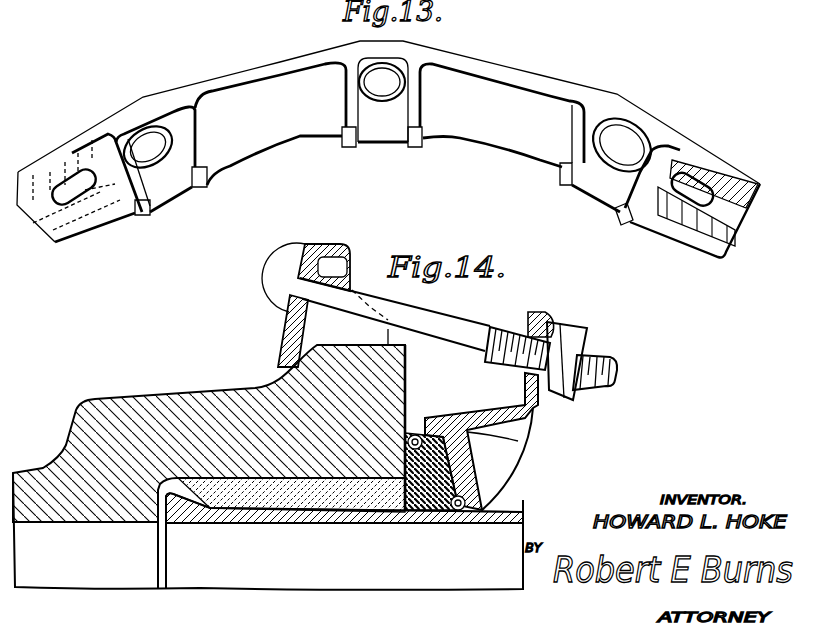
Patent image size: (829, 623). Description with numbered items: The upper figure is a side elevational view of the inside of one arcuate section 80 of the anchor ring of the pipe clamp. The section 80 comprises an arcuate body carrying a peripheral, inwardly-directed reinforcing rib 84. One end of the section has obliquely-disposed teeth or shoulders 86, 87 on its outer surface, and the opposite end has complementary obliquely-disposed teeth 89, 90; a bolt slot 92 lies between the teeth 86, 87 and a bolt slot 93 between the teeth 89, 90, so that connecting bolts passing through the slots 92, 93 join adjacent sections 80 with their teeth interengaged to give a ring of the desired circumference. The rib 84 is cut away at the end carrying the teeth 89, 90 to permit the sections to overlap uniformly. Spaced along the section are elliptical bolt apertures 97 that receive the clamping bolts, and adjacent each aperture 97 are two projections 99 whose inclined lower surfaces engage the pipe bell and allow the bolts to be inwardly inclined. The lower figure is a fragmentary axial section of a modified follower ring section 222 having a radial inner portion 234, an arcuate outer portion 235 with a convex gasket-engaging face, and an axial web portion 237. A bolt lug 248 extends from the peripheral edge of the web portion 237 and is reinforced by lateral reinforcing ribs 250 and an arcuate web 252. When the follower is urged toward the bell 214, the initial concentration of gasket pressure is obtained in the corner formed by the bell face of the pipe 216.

In FIG. 13, the arcuate section 80 is at (223, 150).
In FIG. 13, the reinforcing rib 84 is at (503, 71).
In FIG. 13, the tooth 86 is at (77, 153).
In FIG. 13, the tooth 87 is at (102, 210).
In FIG. 13, the tooth 89 is at (692, 165).
In FIG. 13, the tooth 90 is at (693, 222).
In FIG. 13, the bolt slot 92 is at (65, 197).
In FIG. 13, the bolt slot 93 is at (700, 190).
In FIG. 13, the elliptical bolt aperture 97 is at (627, 145).
In FIG. 13, the projection 99 is at (417, 117).
In FIG. 14, the bell 214 is at (215, 410).
In FIG. 14, the pipe 216 is at (43, 487).
In FIG. 14, the follower ring section 222 is at (474, 405).
In FIG. 14, the radial inner portion 234 is at (483, 502).
In FIG. 14, the arcuate outer portion 235 is at (455, 475).
In FIG. 14, the axial web portion 237 is at (510, 443).
In FIG. 14, the bolt lug 248 is at (547, 313).
In FIG. 14, the lateral reinforcing rib 250 is at (510, 402).
In FIG. 14, the arcuate web 252 is at (512, 471).